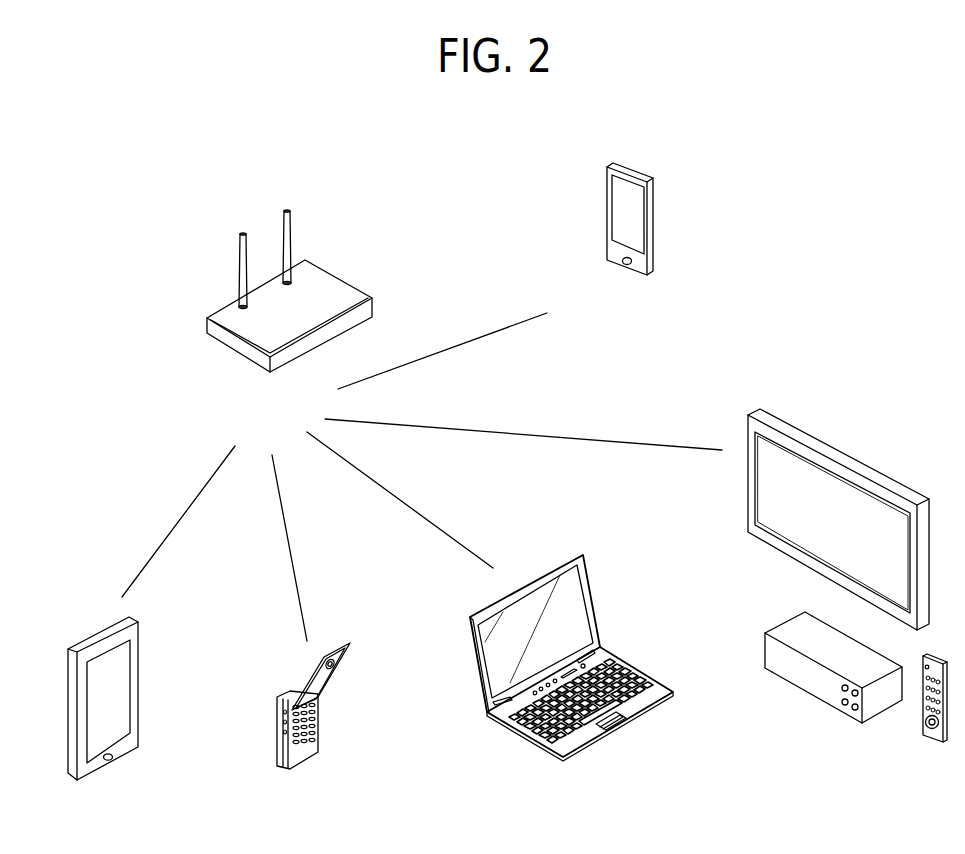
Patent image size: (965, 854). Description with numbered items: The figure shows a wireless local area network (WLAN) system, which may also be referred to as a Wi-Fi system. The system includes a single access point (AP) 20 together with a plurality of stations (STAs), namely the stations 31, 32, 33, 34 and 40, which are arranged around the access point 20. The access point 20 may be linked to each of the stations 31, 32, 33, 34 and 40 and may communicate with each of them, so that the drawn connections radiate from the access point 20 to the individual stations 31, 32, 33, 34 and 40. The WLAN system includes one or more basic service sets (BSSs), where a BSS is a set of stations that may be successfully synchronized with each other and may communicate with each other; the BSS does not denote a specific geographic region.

The access point 20 is at (289, 328).
The station 40 is at (625, 254).
The station 31 is at (99, 733).
The station 32 is at (309, 746).
The station 33 is at (571, 692).
The station 34 is at (847, 601).